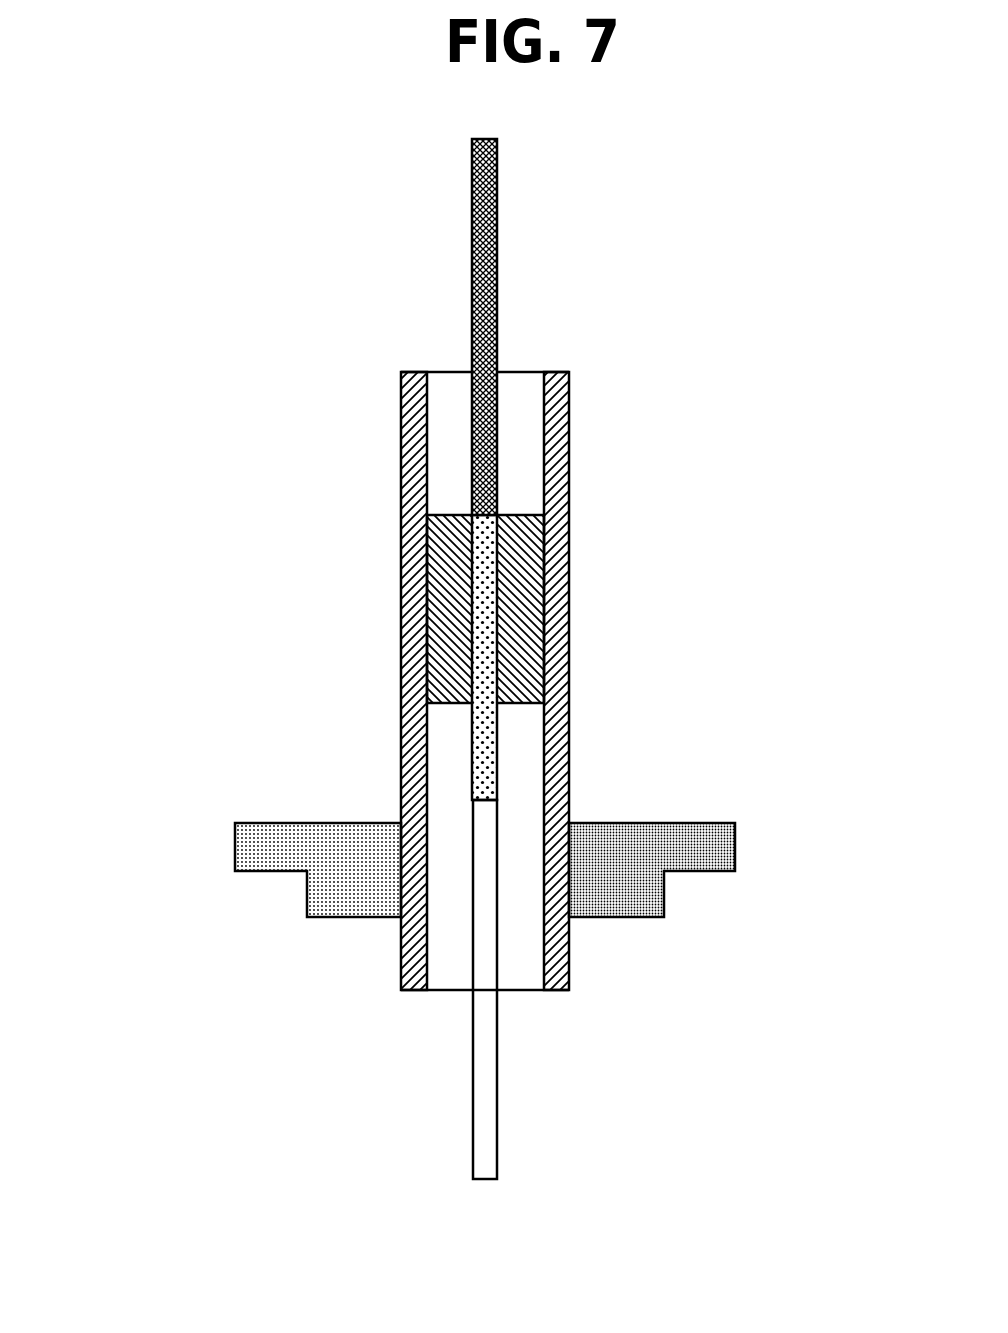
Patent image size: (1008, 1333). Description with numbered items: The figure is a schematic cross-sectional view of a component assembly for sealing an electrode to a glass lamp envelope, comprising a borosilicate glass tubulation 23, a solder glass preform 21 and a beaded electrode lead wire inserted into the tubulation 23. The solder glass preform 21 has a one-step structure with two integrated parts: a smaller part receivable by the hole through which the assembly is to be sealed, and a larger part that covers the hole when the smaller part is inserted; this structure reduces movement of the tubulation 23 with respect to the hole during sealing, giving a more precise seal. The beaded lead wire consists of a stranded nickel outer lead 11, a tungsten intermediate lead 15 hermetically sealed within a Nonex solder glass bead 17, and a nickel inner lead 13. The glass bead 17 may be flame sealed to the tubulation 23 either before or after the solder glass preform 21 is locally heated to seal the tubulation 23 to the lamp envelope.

The stranded nickel outer lead 11 is at (493, 217).
The nickel inner lead 13 is at (476, 1083).
The tungsten intermediate lead 15 is at (497, 457).
The glass bead 17 is at (535, 555).
The solder glass preform 21 is at (262, 848).
The tubulation 23 is at (569, 617).